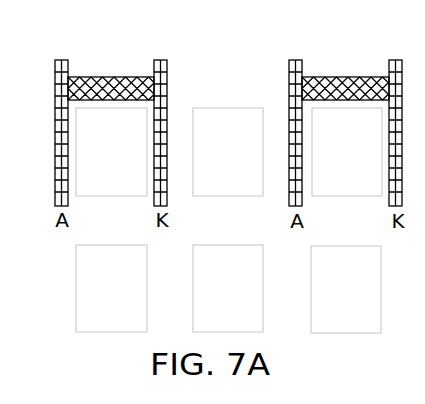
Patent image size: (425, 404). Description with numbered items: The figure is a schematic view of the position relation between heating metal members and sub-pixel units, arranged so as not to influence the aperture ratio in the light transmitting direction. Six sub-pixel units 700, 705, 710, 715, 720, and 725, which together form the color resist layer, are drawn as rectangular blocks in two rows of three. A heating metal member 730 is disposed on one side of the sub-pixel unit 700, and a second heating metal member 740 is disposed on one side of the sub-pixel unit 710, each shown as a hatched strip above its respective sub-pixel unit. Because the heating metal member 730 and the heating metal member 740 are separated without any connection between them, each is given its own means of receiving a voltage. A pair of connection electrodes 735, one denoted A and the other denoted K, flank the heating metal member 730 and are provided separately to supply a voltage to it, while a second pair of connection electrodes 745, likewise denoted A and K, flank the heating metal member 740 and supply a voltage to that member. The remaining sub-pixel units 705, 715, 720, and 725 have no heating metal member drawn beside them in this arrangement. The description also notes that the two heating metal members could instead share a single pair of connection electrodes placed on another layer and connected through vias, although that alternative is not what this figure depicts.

The sub-pixel unit 700 is at (111, 152).
The sub-pixel unit 705 is at (228, 152).
The sub-pixel unit 710 is at (347, 152).
The sub-pixel unit 715 is at (111, 288).
The sub-pixel unit 720 is at (228, 288).
The sub-pixel unit 725 is at (346, 289).
The heating metal member 730 is at (120, 89).
The pair of connection electrodes 735 is at (58, 87).
The heating metal member 740 is at (359, 85).
The pair of connection electrodes 745 is at (298, 84).